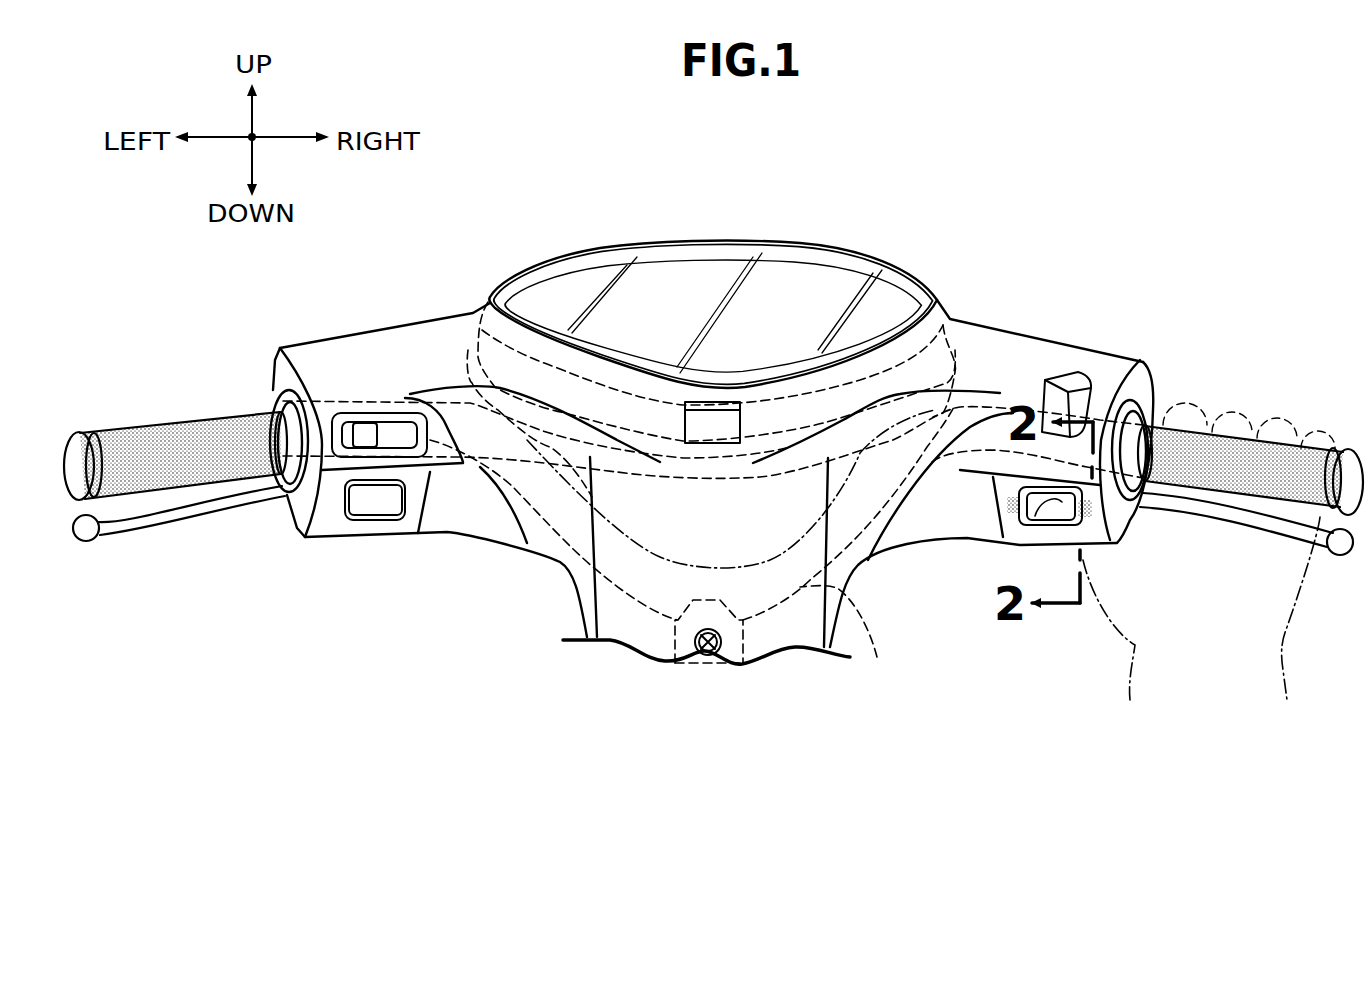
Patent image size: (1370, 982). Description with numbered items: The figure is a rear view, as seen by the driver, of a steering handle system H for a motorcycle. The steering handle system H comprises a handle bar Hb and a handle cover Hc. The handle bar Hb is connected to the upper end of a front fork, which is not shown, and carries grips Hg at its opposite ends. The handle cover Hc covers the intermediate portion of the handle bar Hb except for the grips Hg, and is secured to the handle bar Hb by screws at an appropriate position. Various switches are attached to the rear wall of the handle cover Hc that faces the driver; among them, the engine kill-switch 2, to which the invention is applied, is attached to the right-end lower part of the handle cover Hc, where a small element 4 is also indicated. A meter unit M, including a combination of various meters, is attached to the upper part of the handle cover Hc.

The steering handle system H is at (1012, 324).
The meter unit M is at (676, 278).
The grips Hg is at (176, 440).
The handle cover Hc is at (913, 533).
The handle bar Hb is at (885, 682).
The engine kill-switch 2 is at (1087, 527).
The switch button 4 is at (1033, 520).